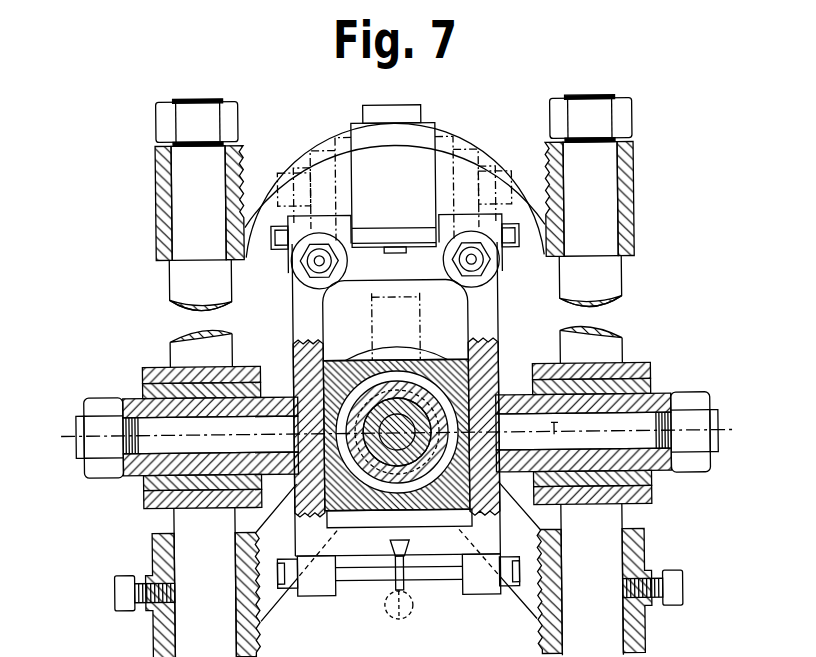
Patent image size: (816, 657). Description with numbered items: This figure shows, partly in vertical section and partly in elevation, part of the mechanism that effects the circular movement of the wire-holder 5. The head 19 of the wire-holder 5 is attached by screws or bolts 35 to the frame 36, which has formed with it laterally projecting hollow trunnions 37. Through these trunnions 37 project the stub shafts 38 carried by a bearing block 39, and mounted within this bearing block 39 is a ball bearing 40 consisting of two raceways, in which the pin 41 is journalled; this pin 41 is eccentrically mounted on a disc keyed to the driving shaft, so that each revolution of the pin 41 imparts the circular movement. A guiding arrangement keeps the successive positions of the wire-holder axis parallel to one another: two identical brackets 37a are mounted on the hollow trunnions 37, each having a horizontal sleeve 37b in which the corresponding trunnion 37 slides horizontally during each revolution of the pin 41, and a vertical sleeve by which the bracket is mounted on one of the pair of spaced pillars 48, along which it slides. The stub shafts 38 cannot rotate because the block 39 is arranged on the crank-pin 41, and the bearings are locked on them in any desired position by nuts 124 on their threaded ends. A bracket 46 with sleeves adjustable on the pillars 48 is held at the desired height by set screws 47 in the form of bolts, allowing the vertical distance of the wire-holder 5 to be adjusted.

The wire-holder 5 is at (372, 322).
The head of the wire-holder 19 is at (422, 137).
The screws or bolts 35 is at (313, 262).
The frame 36 is at (302, 320).
The hollow trunnions 37 is at (270, 405).
The brackets 37a is at (645, 497).
The horizontal sleeve 37b is at (645, 476).
The stub shafts 38 is at (145, 447).
The bearing block 39 is at (347, 495).
The ball bearing 40 is at (415, 495).
The pin 41 is at (398, 425).
The bracket 46 is at (258, 620).
The set screws 47 is at (123, 605).
The pillars 48 is at (178, 340).
The nuts 124 is at (104, 403).